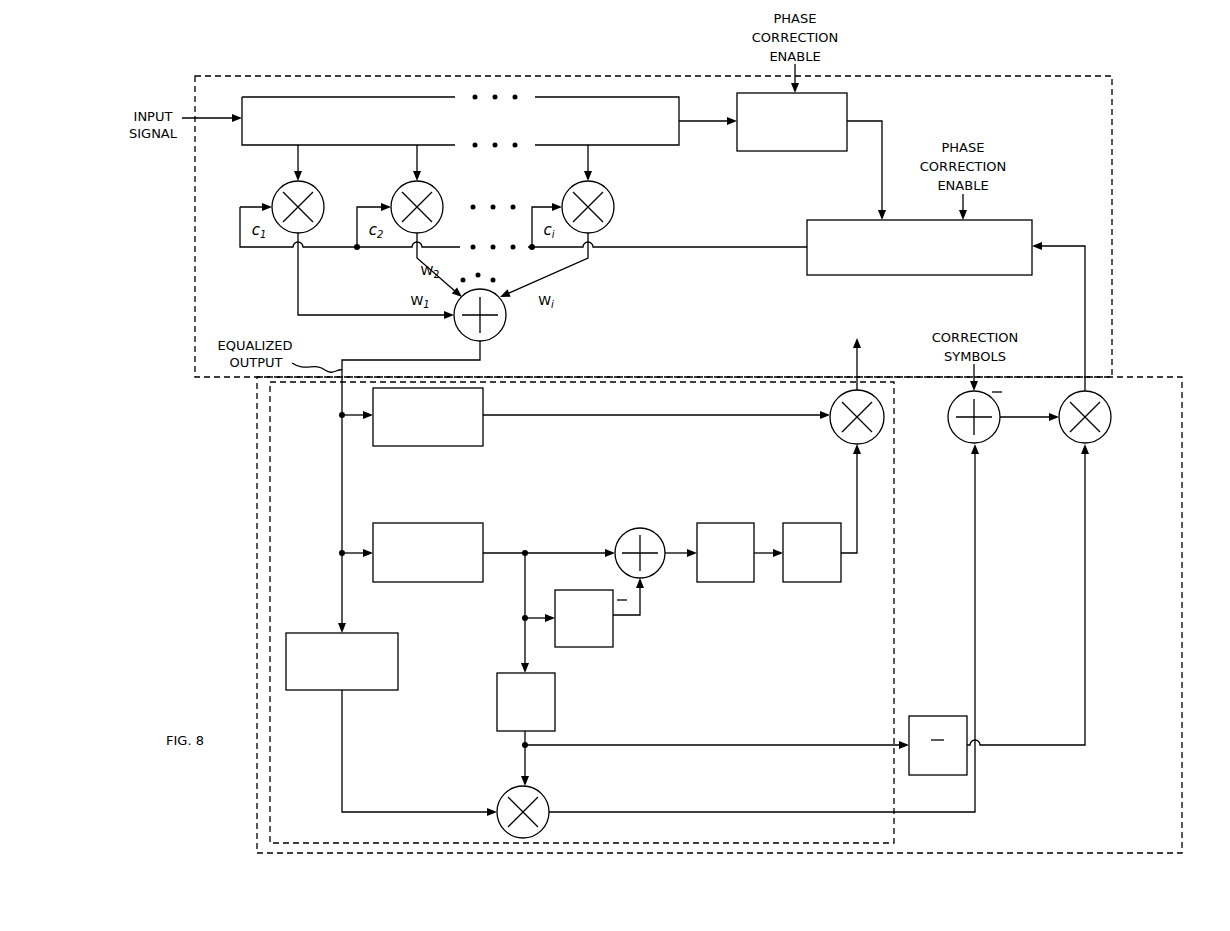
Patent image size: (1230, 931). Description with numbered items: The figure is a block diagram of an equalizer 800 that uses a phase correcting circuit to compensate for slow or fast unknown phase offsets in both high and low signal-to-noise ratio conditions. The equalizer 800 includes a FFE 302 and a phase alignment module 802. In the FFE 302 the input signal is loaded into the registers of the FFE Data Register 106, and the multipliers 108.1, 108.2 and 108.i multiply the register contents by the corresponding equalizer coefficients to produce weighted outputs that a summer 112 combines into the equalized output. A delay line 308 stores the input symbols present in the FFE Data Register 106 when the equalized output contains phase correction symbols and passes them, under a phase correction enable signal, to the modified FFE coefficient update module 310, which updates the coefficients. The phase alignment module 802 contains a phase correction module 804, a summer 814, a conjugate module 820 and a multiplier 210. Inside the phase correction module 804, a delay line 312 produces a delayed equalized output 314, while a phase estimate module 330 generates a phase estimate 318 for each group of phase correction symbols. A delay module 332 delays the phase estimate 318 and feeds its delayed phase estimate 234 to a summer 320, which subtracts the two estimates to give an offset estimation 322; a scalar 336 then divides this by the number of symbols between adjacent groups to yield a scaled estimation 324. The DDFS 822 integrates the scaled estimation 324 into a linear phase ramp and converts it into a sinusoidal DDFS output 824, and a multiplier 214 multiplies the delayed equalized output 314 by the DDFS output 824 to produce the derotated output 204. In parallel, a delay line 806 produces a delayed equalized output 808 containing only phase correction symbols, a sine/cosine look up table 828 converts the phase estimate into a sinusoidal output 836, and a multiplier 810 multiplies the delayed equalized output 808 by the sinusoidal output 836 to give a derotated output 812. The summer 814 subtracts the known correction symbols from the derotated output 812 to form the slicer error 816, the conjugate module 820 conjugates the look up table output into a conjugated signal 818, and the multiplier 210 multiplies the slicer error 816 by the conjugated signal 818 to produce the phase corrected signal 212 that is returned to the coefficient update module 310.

The FFE 302 is at (1112, 76).
The equalizer 800 is at (1172, 148).
The FFE Data Register 106 is at (679, 145).
The multiplier 108.1 is at (318, 190).
The multiplier 108.2 is at (437, 190).
The multiplier 108.i is at (608, 190).
The summer 112 is at (507, 320).
The delay line 308 is at (785, 151).
The modified FFE coefficient update module 310 is at (807, 275).
The phase corrected signal 212 is at (1085, 300).
The derotated output 204 is at (847, 355).
The phase alignment module 802 is at (1183, 377).
The phase correction module 804 is at (894, 512).
The delay line 312 is at (373, 446).
The delayed equalized output 314 is at (612, 416).
The phase estimate module 330 is at (483, 523).
The phase estimate 318 is at (572, 553).
The summer 320 is at (640, 528).
The offset estimation 322 is at (677, 553).
The scalar 336 is at (726, 523).
The scaled estimation 324 is at (766, 556).
The Direct Digital Frequency Synthesizer (DDFS) 822 is at (808, 582).
The DDFS output 824 is at (857, 490).
The multiplier 214 is at (835, 432).
The delay module 332 is at (613, 647).
The delayed phase estimate 234 is at (645, 608).
The delay line 806 is at (398, 655).
The delayed equalized output 808 is at (401, 812).
The sine/cosine look up table 828 is at (497, 707).
The sinusoidal output 836 is at (522, 768).
The multiplier 810 is at (546, 797).
The derotated output 812 is at (684, 812).
The conjugate module 820 is at (935, 716).
The conjugated signal 818 is at (1027, 745).
The summer 814 is at (965, 446).
The slicer error 816 is at (1028, 422).
The multiplier 210 is at (1111, 418).